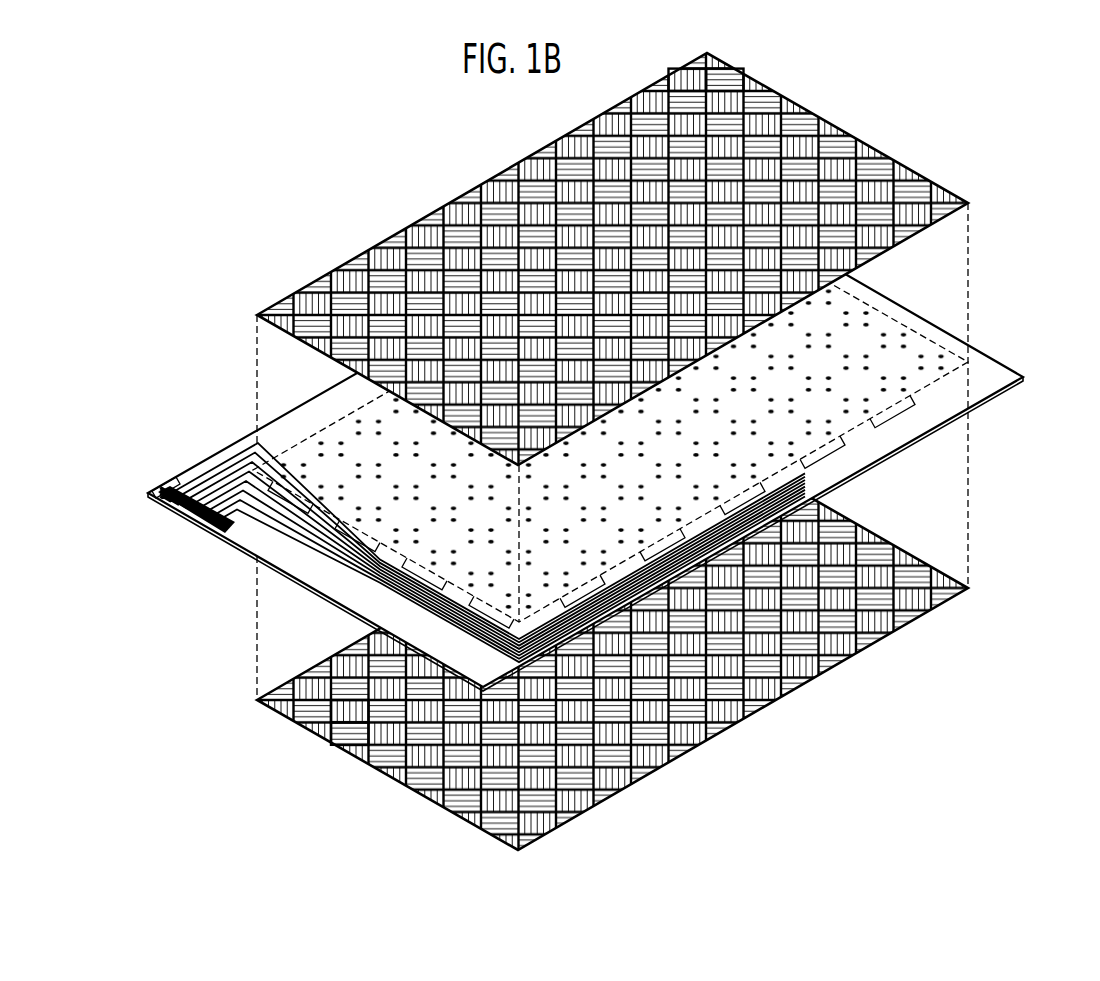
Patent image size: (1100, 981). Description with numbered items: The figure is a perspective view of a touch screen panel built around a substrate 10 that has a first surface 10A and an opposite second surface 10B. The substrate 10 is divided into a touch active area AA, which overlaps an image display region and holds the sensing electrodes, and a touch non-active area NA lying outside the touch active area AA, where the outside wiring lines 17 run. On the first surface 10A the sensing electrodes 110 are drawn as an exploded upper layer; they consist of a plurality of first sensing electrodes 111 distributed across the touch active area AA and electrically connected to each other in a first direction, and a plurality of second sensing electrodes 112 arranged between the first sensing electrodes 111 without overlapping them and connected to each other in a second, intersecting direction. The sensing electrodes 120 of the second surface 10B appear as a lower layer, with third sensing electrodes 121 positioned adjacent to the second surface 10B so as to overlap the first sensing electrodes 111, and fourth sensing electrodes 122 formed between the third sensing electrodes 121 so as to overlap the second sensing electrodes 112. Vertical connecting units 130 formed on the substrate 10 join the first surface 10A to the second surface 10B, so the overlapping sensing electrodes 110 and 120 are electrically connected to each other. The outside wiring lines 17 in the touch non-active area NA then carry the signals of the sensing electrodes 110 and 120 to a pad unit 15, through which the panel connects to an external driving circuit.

The substrate 10 is at (603, 437).
The first surface 10A is at (990, 363).
The second surface 10B is at (987, 400).
The touch active area AA is at (850, 422).
The touch non-active area NA is at (847, 470).
The pad unit 15 is at (160, 487).
The outside wiring lines 17 is at (210, 470).
The vertical connecting units 130 is at (482, 524).
The sensing electrodes of the first surface 110 is at (612, 242).
The first sensing electrodes 111 is at (697, 83).
The second sensing electrodes 112 is at (730, 82).
The sensing electrodes of the second surface 120 is at (600, 644).
The third sensing electrodes 121 is at (340, 710).
The fourth sensing electrodes 122 is at (347, 733).